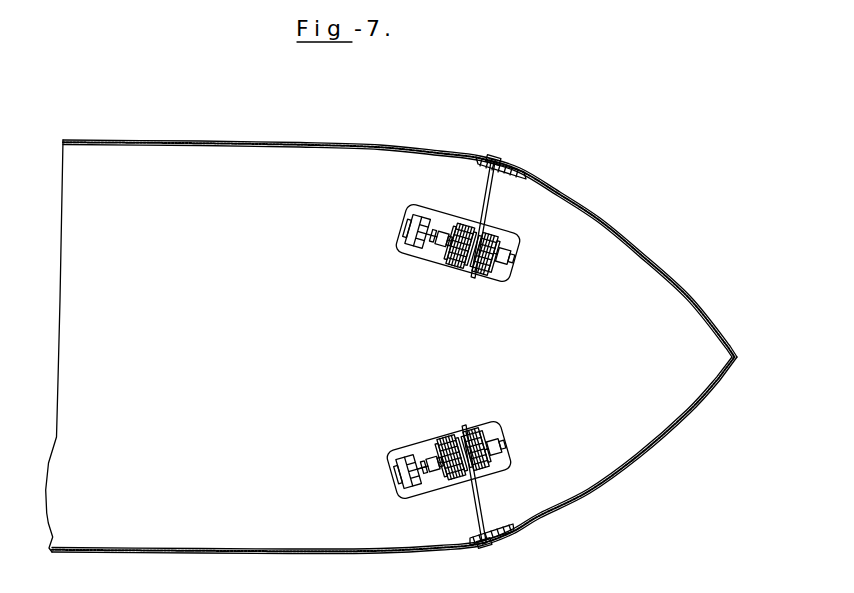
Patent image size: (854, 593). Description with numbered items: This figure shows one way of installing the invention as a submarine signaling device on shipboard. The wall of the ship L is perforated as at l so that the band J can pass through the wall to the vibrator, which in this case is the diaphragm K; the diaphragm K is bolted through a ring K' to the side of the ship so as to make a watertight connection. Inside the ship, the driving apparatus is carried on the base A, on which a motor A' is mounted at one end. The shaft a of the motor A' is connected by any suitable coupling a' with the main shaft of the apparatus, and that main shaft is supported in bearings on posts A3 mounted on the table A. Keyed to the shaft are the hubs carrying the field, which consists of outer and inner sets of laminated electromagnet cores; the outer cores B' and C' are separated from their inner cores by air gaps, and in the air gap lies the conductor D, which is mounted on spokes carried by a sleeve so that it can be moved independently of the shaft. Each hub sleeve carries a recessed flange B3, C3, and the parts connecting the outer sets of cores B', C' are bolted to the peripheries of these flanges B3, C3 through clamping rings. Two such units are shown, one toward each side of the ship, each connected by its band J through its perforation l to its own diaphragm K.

The wall of a ship L is at (572, 201).
The conductor D is at (484, 228).
The base A is at (465, 432).
The motor A' is at (416, 334).
The shaft a is at (434, 332).
The coupling a' is at (447, 332).
The posts A3 is at (510, 257).
The cores C' is at (456, 379).
The recessed flange C3 is at (452, 266).
The cores B' is at (495, 364).
The recessed flange B3 is at (506, 288).
The band J is at (481, 214).
The perforation l is at (486, 172).
The diaphragm K is at (498, 354).
The ring K' is at (514, 355).